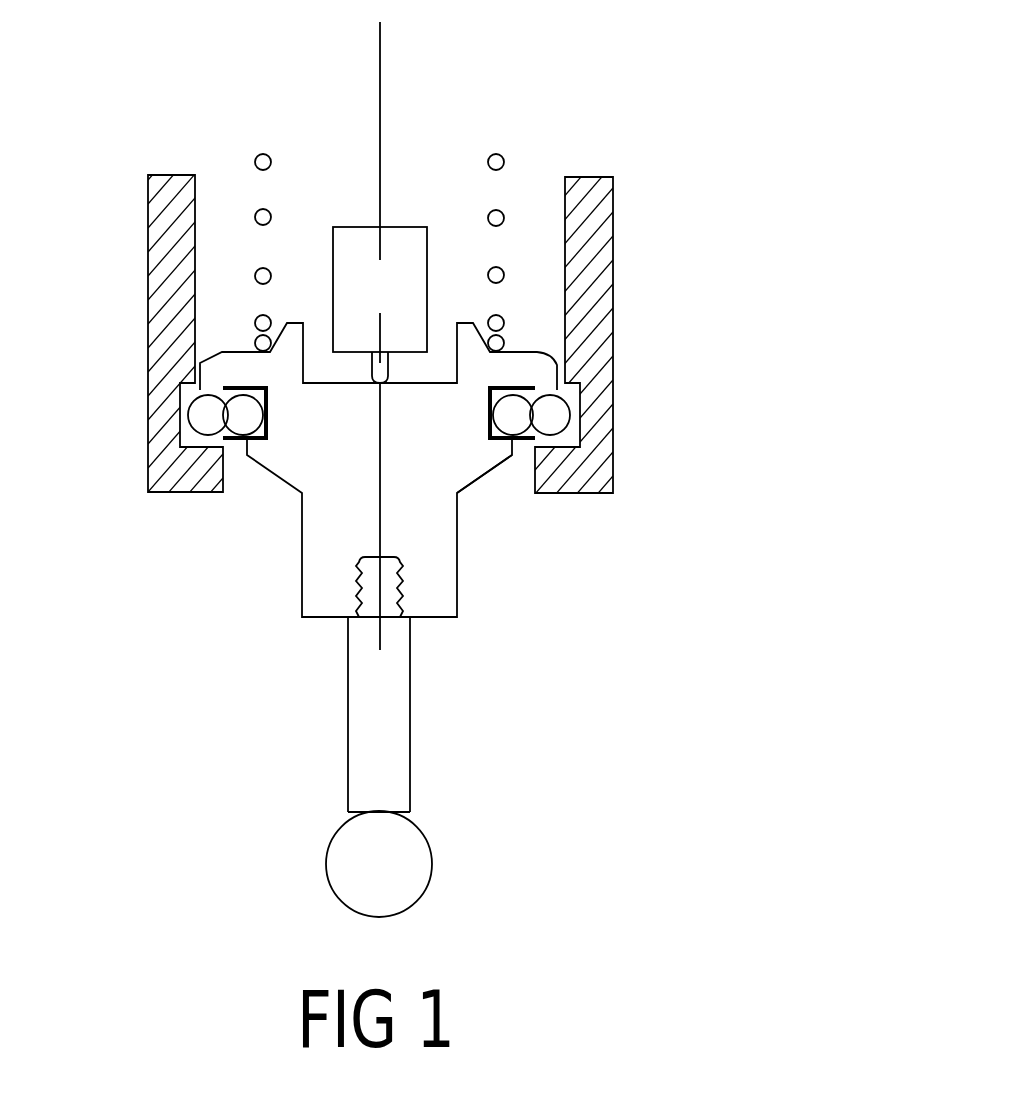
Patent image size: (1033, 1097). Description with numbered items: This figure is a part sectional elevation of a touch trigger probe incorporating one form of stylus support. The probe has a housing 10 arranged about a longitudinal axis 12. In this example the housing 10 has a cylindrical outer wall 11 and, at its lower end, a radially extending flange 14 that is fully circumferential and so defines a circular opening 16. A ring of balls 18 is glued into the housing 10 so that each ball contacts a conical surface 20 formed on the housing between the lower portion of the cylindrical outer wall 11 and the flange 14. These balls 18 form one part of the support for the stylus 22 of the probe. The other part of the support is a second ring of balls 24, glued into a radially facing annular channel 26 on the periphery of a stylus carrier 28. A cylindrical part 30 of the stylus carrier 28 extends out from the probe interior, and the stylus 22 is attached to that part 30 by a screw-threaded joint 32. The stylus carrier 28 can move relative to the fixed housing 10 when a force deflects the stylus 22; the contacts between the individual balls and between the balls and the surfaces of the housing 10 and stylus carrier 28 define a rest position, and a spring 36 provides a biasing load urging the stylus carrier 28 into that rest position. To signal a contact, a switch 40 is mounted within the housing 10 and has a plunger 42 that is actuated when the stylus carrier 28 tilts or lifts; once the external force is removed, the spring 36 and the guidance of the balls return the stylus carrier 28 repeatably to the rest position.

The housing 10 is at (617, 217).
The cylindrical outer wall 11 is at (193, 289).
The longitudinal axis 12 is at (380, 99).
The flange 14 is at (567, 480).
The opening 16 is at (503, 480).
The ring of balls 18 is at (203, 425).
The conical surface 20 is at (548, 428).
The stylus 22 is at (380, 720).
The second ring of balls 24 is at (240, 425).
The annular channel 26 is at (275, 437).
The stylus carrier 28 is at (480, 368).
The cylindrical part 30 is at (437, 515).
The screw-threaded joint 32 is at (400, 598).
The spring 36 is at (500, 155).
The switch 40 is at (412, 250).
The plunger 42 is at (392, 370).